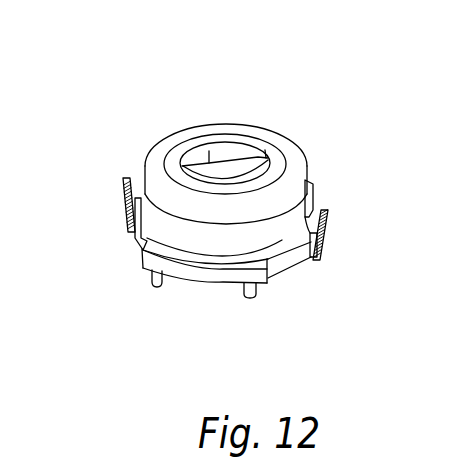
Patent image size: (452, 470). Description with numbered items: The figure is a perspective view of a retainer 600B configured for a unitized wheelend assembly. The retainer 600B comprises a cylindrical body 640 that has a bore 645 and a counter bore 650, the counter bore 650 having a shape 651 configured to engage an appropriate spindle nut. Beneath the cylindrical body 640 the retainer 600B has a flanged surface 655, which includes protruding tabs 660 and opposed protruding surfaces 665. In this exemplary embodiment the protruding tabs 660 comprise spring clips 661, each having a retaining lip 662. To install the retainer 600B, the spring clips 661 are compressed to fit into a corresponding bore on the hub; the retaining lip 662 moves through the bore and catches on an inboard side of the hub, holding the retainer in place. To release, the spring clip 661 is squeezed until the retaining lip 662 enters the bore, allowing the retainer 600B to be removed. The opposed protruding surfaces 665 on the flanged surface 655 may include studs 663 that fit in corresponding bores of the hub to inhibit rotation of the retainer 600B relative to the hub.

The retainer 600B is at (133, 113).
The cylindrical body 640 is at (291, 152).
The bore 645 is at (228, 155).
The counter bore 650 is at (248, 162).
The shape 651 is at (261, 157).
The flanged surface 655 is at (290, 256).
The protruding tabs 660 is at (317, 205).
The spring clips 661 is at (325, 230).
The retaining lip 662 is at (130, 218).
The studs 663 is at (155, 287).
The opposed protruding surfaces 665 is at (207, 280).